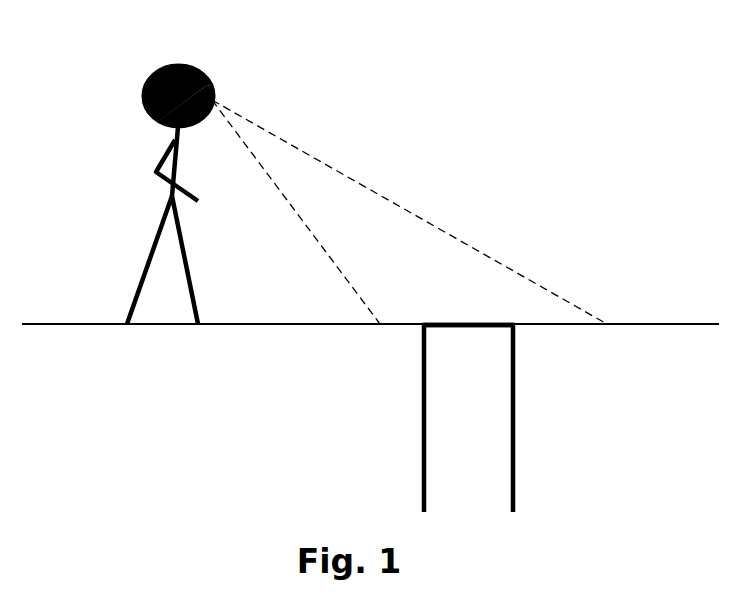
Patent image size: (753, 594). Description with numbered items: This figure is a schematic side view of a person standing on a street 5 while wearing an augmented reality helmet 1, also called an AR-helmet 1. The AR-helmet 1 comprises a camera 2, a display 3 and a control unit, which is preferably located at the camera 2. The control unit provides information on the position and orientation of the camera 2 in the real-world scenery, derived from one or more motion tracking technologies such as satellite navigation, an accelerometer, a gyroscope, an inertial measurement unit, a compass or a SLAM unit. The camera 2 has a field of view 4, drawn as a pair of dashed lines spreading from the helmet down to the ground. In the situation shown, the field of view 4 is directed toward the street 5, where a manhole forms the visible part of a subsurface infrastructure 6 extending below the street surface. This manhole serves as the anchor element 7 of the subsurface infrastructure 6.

The augmented reality helmet 1 is at (153, 72).
The camera 2 is at (214, 99).
The display 3 is at (212, 118).
The field of view 4 is at (369, 188).
The street 5 is at (643, 322).
The subsurface infrastructure 6 is at (516, 450).
The anchor element 7 is at (469, 321).